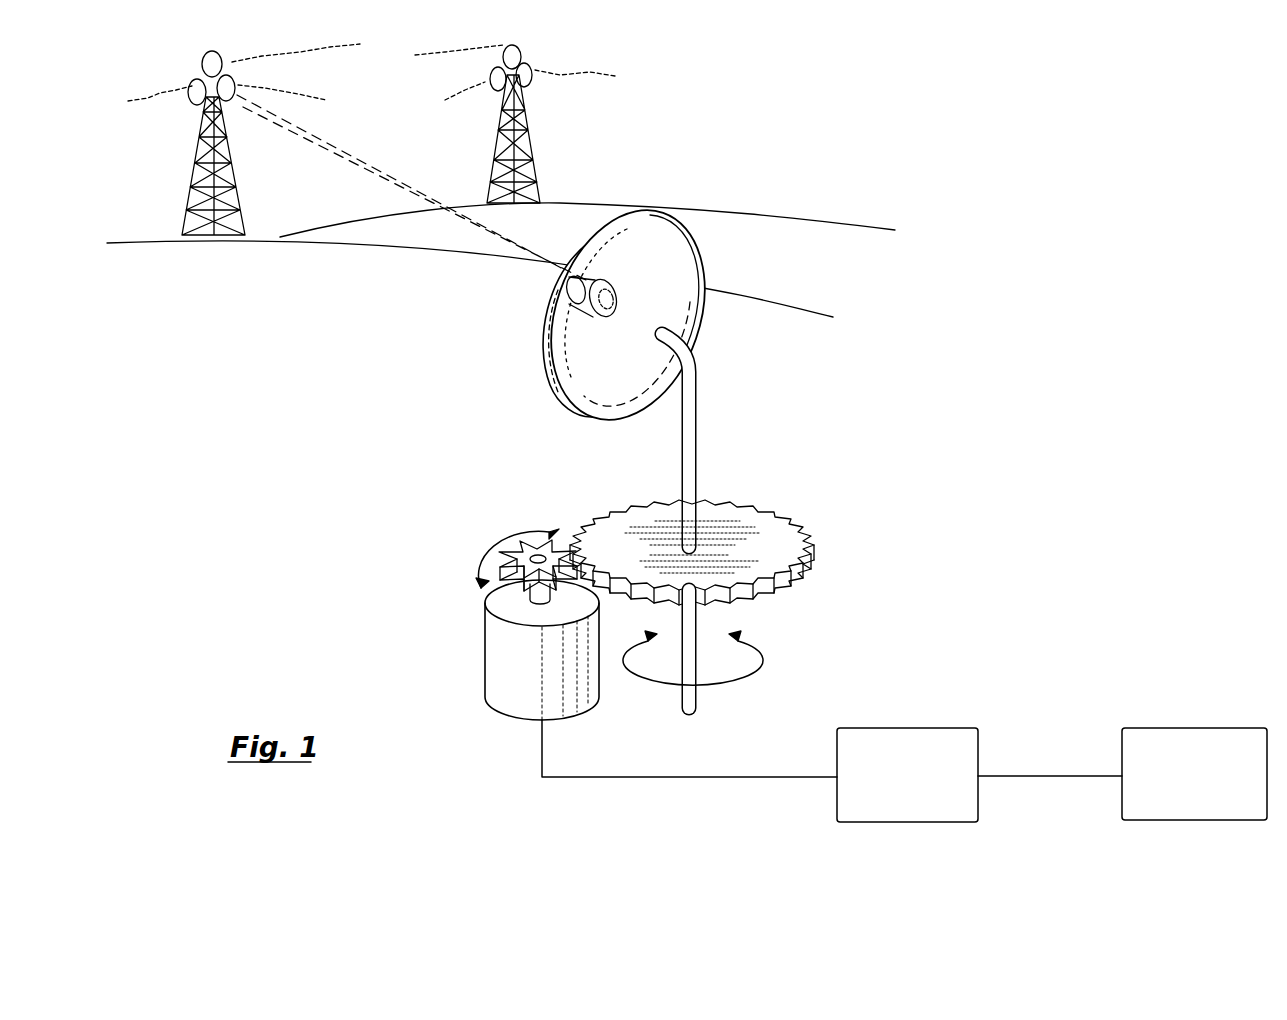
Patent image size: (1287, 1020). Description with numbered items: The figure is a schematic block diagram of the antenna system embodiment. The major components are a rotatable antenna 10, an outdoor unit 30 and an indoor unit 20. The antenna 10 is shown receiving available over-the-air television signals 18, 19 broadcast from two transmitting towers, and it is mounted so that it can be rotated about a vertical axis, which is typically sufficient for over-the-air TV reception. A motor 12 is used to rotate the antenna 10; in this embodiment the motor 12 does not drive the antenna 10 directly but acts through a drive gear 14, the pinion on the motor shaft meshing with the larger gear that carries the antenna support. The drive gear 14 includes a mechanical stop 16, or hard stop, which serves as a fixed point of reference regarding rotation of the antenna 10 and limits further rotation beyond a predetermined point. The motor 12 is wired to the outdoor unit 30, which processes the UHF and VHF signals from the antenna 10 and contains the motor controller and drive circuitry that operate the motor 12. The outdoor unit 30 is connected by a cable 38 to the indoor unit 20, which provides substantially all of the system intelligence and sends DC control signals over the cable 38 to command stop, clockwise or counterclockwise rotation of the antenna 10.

The rotatable antenna 10 is at (550, 358).
The motor 12 is at (510, 644).
The drive gear 14 is at (753, 530).
The mechanical stop 16 is at (710, 599).
The television signal 18 is at (198, 154).
The television signal 19 is at (527, 130).
The indoor unit 20 is at (1178, 725).
The outdoor unit 30 is at (902, 727).
The cable 38 is at (1040, 773).